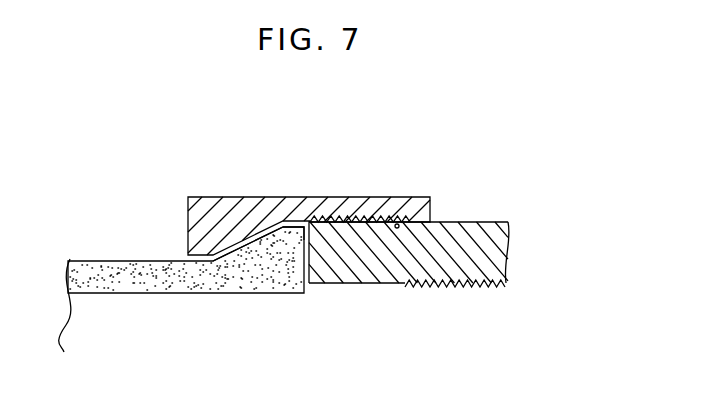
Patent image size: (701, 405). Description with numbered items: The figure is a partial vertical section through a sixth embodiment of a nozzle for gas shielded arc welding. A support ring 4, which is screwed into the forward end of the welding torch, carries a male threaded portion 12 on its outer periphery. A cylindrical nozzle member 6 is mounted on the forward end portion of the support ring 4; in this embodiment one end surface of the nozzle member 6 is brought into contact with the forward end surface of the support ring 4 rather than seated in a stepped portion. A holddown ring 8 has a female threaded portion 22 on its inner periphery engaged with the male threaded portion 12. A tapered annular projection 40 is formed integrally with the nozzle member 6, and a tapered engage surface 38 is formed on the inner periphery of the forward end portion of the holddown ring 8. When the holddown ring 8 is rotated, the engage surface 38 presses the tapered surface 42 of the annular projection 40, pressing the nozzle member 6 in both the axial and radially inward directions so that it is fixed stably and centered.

The support ring 4 is at (497, 257).
The nozzle member 6 is at (103, 262).
The holddown ring 8 is at (362, 208).
The male threaded portion 12 is at (335, 218).
The female threaded portion 22 is at (397, 223).
The tapered engage surface 38 is at (228, 250).
The tapered annular projection 40 is at (291, 232).
The tapered surface 42 is at (251, 241).